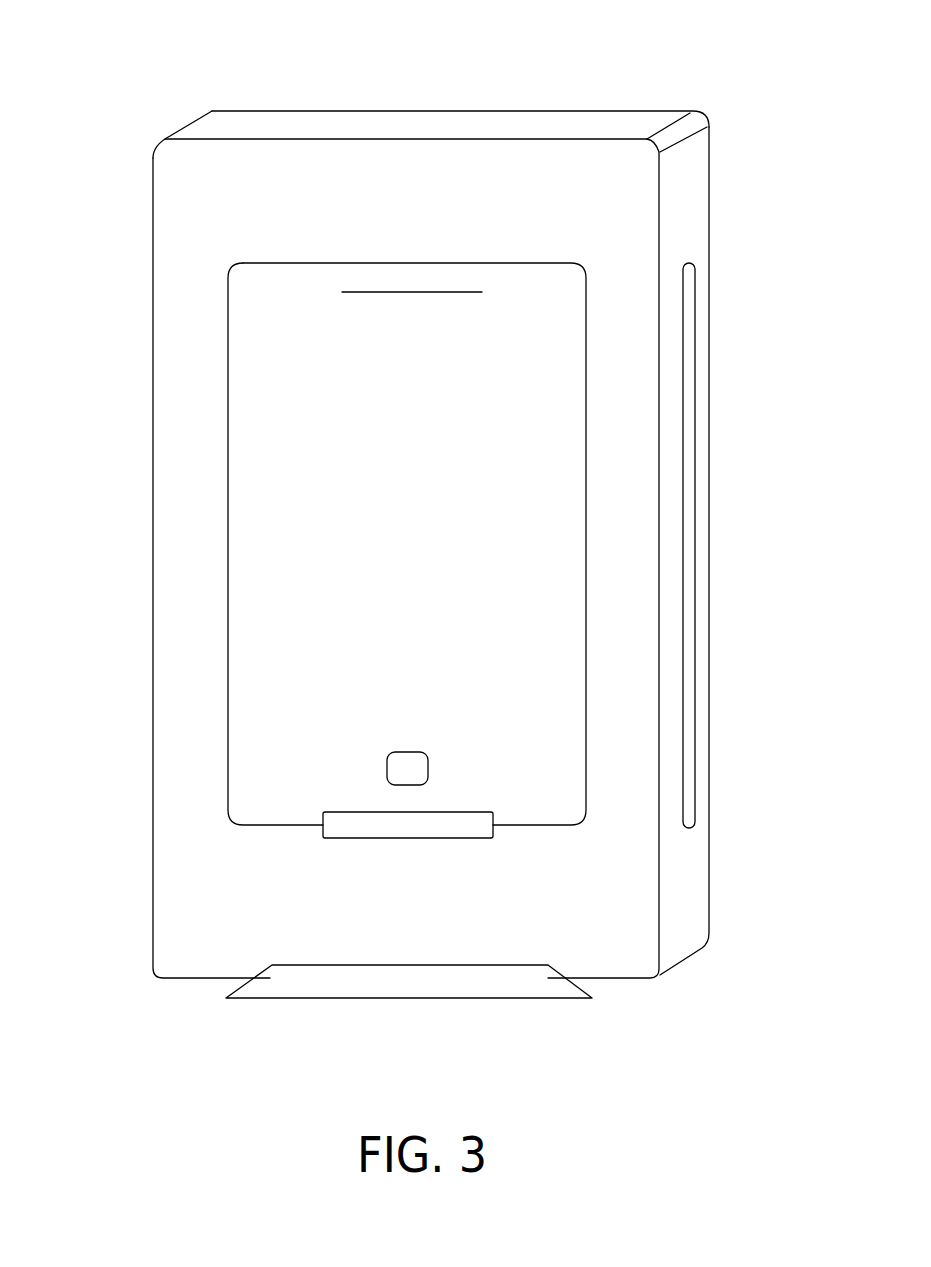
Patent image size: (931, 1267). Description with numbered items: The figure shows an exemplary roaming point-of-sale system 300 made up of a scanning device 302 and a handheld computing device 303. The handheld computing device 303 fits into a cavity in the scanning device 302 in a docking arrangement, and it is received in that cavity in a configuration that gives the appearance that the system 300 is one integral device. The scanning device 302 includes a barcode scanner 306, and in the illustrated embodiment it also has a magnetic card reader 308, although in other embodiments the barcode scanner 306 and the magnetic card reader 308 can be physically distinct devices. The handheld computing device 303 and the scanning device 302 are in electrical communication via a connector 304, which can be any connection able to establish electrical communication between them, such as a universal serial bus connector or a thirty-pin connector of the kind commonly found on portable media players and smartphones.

The roaming point-of-sale system 300 is at (265, 75).
The scanning device 302 is at (153, 596).
The handheld computing device 303 is at (228, 330).
The connector 304 is at (493, 832).
The barcode scanner 306 is at (232, 990).
The magnetic card reader 308 is at (694, 487).